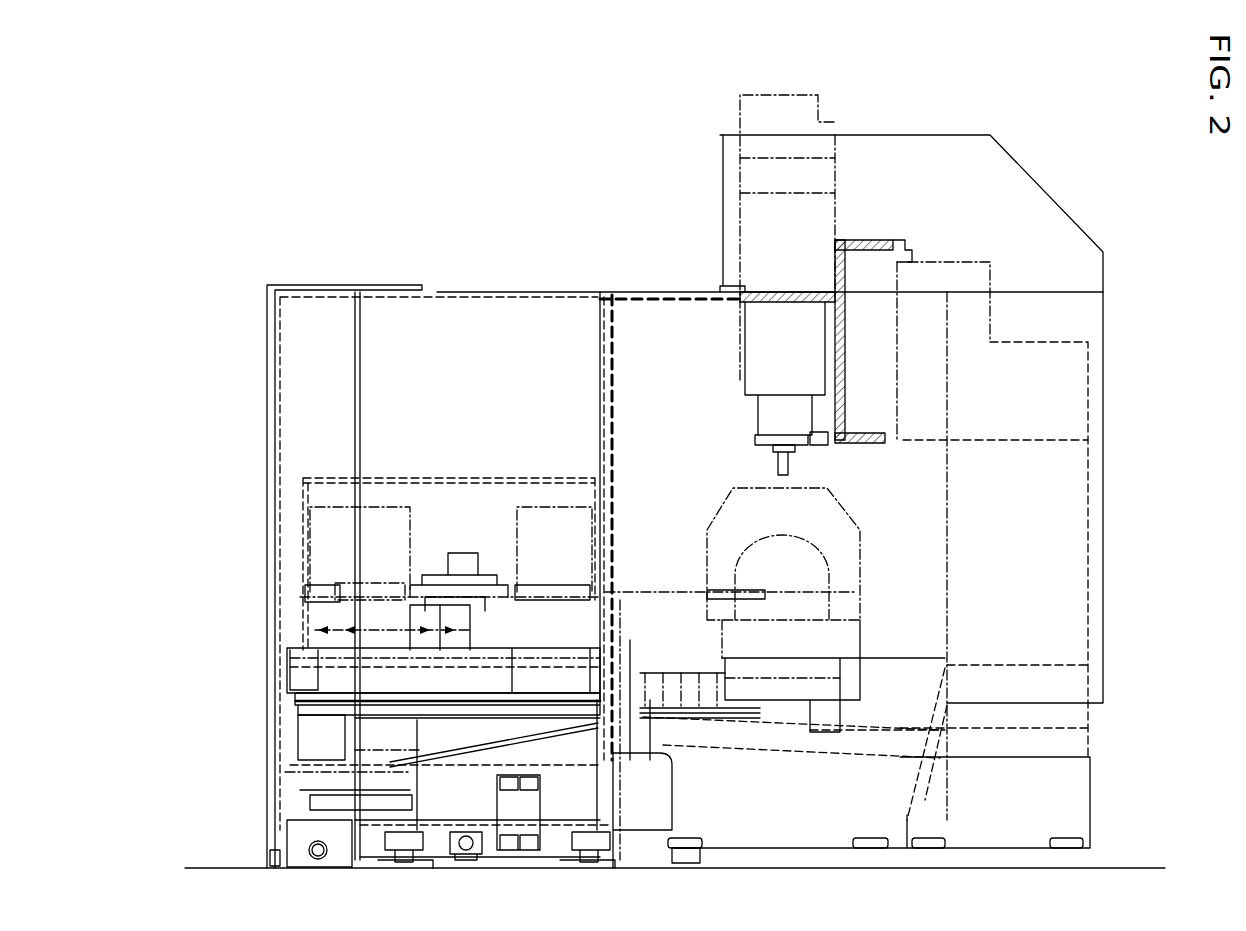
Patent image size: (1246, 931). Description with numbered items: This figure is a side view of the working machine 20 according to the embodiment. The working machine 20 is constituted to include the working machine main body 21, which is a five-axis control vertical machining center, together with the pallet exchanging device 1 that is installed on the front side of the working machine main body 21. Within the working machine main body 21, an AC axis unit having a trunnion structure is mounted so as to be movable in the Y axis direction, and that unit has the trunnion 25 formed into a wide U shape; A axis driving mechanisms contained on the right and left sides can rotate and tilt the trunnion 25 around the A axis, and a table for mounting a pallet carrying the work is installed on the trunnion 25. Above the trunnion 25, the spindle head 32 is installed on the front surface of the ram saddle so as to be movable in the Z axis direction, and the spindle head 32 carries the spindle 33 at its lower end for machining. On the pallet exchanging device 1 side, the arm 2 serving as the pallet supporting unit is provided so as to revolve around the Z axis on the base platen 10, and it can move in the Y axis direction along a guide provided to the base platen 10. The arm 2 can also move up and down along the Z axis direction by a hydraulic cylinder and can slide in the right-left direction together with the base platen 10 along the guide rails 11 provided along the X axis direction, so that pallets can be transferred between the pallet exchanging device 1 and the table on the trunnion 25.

The pallet exchanging device 1 is at (396, 461).
The arm 2 is at (297, 600).
The base platen 10 is at (318, 762).
The guide rails 11 is at (405, 856).
The working machine 20 is at (508, 191).
The working machine main body 21 is at (1018, 186).
The trunnion 25 is at (845, 580).
The spindle head 32 is at (752, 255).
The spindle 33 is at (778, 453).